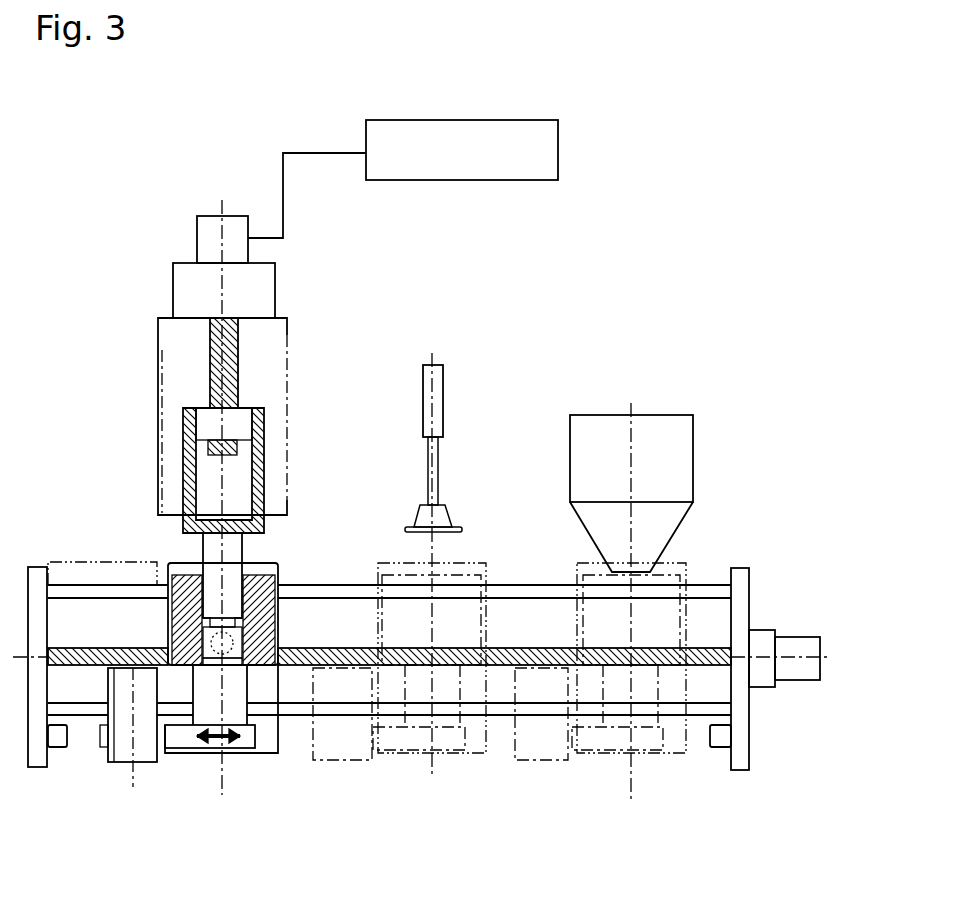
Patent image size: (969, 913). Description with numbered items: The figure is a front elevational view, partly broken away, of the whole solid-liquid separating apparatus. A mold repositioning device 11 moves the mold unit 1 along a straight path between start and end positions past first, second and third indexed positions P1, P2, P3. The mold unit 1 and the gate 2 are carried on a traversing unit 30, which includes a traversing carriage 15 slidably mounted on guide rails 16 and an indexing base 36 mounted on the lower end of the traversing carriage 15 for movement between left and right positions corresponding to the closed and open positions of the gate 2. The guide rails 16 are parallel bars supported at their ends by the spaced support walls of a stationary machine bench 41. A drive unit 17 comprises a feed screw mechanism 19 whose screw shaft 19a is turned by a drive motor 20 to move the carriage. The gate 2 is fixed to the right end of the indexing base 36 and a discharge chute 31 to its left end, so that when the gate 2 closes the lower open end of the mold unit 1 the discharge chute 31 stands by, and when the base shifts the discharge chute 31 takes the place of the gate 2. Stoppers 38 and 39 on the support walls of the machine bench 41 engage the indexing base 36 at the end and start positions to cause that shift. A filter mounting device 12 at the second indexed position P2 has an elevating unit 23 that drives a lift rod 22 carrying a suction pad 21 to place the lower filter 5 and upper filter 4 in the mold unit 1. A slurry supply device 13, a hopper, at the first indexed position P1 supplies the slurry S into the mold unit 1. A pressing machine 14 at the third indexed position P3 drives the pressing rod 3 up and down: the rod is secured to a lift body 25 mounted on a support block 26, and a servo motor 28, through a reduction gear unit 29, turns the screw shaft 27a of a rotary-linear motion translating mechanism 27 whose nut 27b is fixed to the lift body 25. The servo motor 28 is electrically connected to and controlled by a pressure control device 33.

The mold unit 1 is at (257, 590).
The gate 2 is at (203, 683).
The pressing rod 3 is at (240, 553).
The upper filter 4 is at (484, 437).
The lower filter 5 is at (455, 526).
The mold repositioning device 11 is at (786, 688).
The filter mounting device 12 is at (413, 398).
The slurry supply device 13 is at (605, 445).
The pressing machine 14 is at (192, 350).
The traversing carriage 15 is at (268, 748).
The guide rails 16 is at (513, 585).
The drive unit 17 is at (700, 643).
The feed screw mechanism 19 is at (472, 672).
The screw shaft 19a is at (505, 657).
The drive motor 20 is at (800, 637).
The suction pad 21 is at (440, 518).
The lift rod 22 is at (428, 480).
The elevating unit 23 is at (433, 362).
The lift body 25 is at (184, 448).
The support block 26 is at (162, 350).
The rotary-linear motion translating mechanism 27 is at (331, 343).
The screw shaft 27a is at (238, 355).
The nut 27b is at (243, 420).
The servo motor 28 is at (215, 215).
The reduction gear unit 29 is at (268, 283).
The traversing unit 30 is at (77, 555).
The discharge chute 31 is at (130, 762).
The pressure control device 33 is at (460, 130).
The indexing base 36 is at (183, 733).
The stopper 38 is at (62, 748).
The stopper 39 is at (718, 745).
The stationary machine bench 41 is at (738, 765).
The slurry S is at (232, 600).
The first indexed position P1 is at (631, 803).
The second indexed position P2 is at (432, 777).
The third indexed position P3 is at (222, 795).